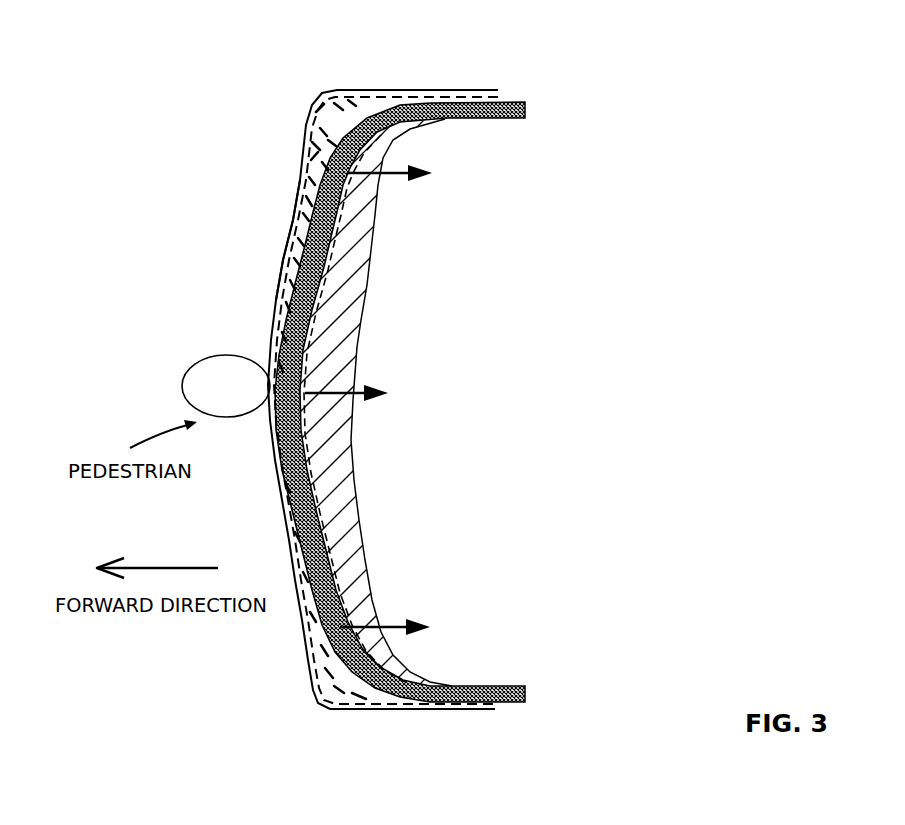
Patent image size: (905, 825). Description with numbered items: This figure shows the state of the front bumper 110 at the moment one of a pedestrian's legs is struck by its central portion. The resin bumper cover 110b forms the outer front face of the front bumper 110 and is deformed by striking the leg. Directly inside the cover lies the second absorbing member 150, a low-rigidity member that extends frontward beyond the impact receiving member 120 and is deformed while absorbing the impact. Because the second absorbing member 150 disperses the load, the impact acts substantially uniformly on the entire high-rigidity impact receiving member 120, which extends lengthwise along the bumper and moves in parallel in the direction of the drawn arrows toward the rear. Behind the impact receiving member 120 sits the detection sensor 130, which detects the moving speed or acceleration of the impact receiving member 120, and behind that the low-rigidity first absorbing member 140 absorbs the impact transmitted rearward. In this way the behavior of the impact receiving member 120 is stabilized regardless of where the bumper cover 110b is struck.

The front bumper 110 is at (352, 87).
The bumper cover 110b is at (313, 118).
The impact receiving member 120 is at (307, 148).
The detection sensor 130 is at (397, 412).
The first absorbing member 140 is at (380, 203).
The second absorbing member 150 is at (282, 238).